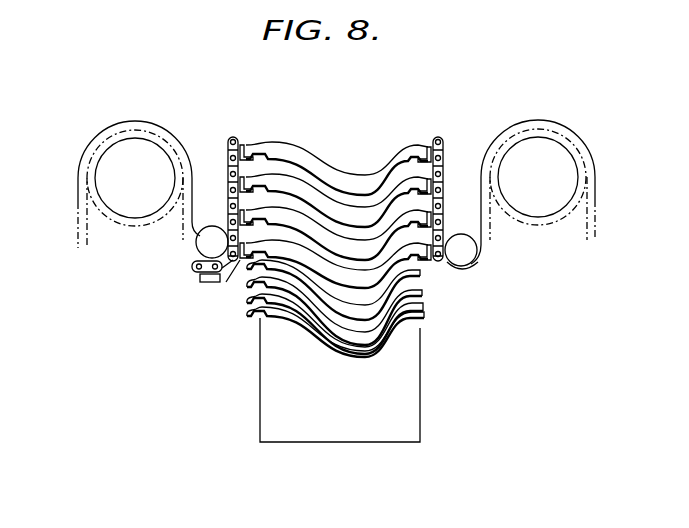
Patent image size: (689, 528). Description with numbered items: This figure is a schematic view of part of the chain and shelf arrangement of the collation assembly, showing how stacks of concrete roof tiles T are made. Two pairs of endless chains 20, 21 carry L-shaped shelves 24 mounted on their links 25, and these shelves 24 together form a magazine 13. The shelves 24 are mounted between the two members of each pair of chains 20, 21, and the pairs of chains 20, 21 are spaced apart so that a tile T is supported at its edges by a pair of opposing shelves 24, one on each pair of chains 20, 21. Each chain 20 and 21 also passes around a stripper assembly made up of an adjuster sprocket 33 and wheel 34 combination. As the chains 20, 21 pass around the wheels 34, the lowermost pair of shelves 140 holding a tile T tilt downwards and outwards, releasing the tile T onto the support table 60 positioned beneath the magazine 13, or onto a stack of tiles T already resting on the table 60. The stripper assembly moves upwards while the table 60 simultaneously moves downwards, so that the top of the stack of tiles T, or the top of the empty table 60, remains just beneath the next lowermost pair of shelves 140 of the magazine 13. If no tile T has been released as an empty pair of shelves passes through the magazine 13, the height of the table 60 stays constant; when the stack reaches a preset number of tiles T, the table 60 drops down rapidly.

The magazine 13 is at (334, 100).
The endless chain 20 is at (548, 125).
The endless chain 21 is at (142, 127).
The L-shaped shelf 24 is at (252, 144).
The chain link 25 is at (227, 283).
The adjuster sprocket 33 is at (100, 176).
The wheel 34 is at (203, 241).
The support table 60 is at (345, 424).
The lowermost shelves 140 is at (238, 262).
The concrete roof tile T is at (350, 180).